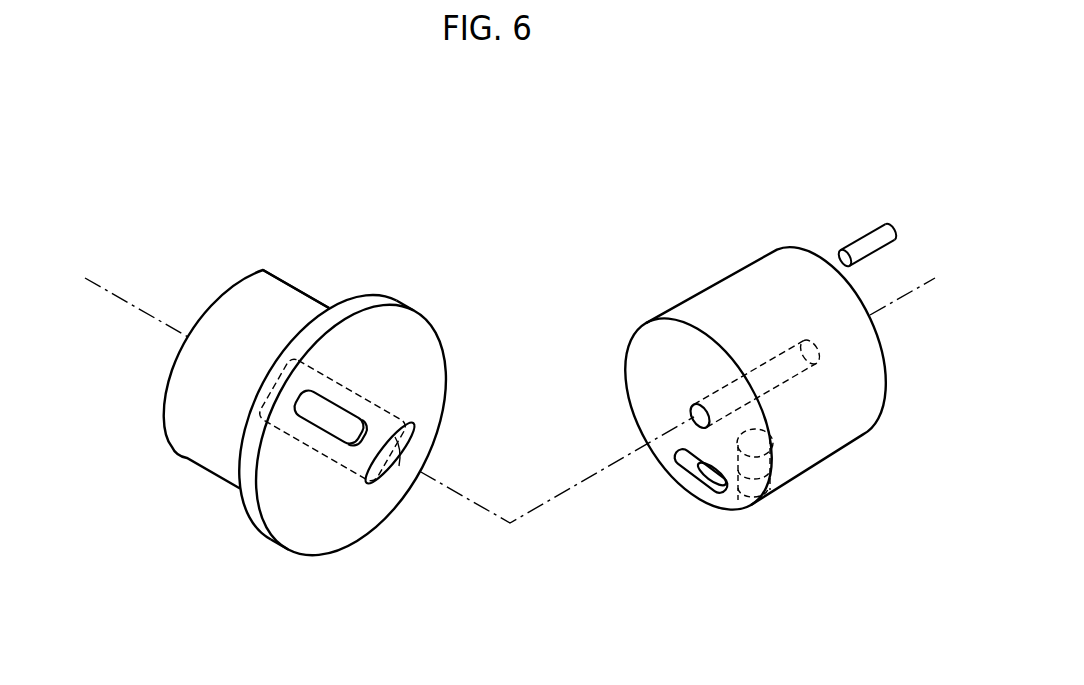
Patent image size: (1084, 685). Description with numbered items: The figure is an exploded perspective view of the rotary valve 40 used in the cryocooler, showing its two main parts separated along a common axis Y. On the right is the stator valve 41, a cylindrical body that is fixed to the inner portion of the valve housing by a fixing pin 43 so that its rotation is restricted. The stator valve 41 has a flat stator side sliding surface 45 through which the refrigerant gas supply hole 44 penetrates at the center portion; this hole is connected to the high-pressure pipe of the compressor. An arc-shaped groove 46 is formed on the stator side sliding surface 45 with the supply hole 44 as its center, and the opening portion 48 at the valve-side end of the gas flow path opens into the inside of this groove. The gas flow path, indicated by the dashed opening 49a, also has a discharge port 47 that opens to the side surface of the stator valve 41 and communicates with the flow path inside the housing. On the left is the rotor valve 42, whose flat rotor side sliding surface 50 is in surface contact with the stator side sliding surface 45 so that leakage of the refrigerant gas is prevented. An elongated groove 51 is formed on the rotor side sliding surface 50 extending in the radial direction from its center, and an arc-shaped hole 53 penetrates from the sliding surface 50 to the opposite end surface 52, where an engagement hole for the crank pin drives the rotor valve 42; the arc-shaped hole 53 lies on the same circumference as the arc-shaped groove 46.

The rotary valve 40 is at (928, 149).
The axis Y is at (116, 293).
The stator valve 41 is at (728, 303).
The rotor valve 42 is at (285, 288).
The fixing pin 43 is at (850, 246).
The refrigerant gas supply hole 44 is at (688, 408).
The stator side sliding surface 45 is at (643, 350).
The arc-shaped groove 46 is at (677, 463).
The discharge port 47 is at (744, 495).
The opening portion 48 is at (697, 477).
The opening of pin hole 49a is at (775, 470).
The rotor side sliding surface 50 is at (430, 357).
The elongated groove 51 is at (328, 415).
The opposite end surface 52 is at (200, 302).
The arc-shaped hole 53 is at (393, 475).